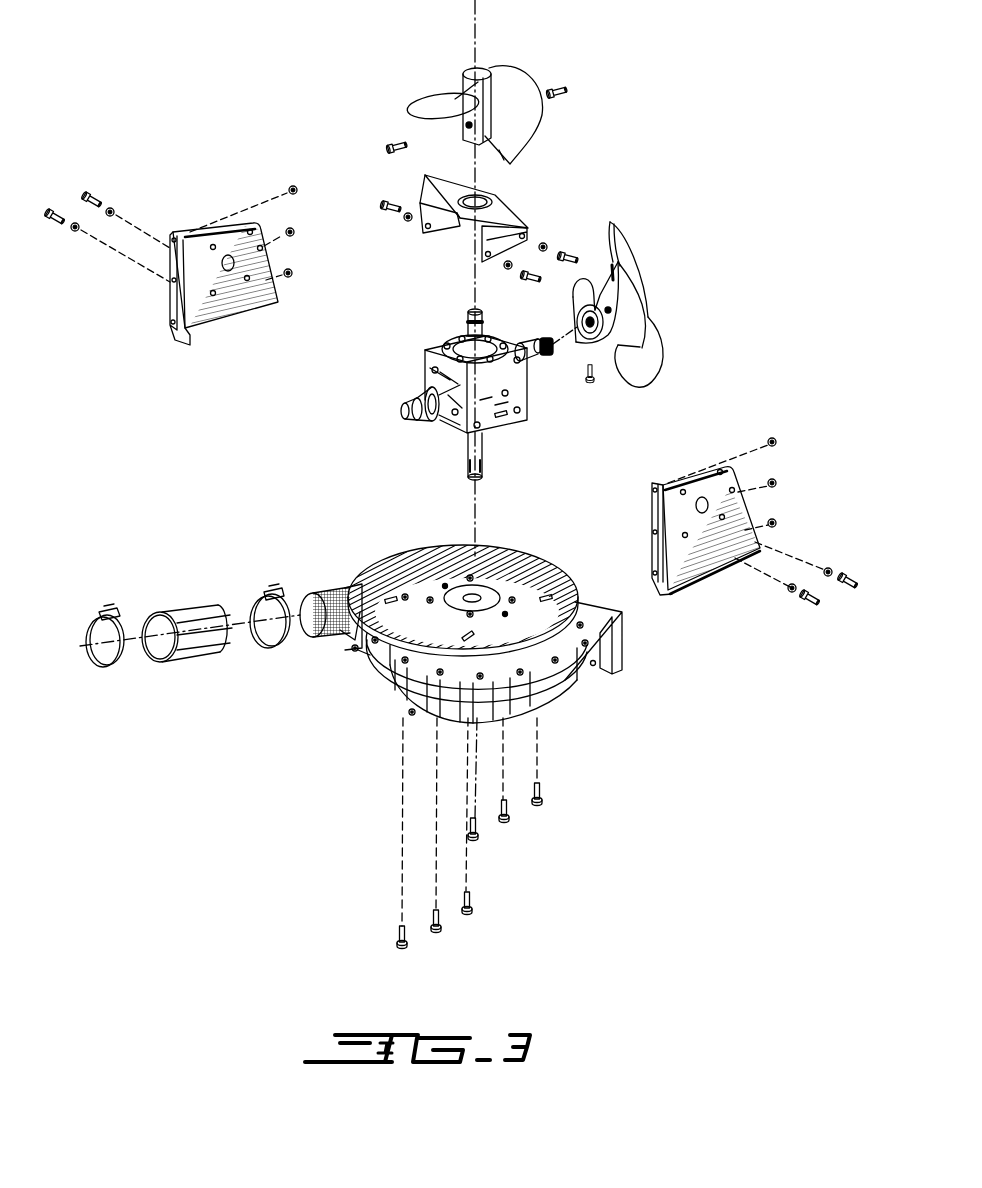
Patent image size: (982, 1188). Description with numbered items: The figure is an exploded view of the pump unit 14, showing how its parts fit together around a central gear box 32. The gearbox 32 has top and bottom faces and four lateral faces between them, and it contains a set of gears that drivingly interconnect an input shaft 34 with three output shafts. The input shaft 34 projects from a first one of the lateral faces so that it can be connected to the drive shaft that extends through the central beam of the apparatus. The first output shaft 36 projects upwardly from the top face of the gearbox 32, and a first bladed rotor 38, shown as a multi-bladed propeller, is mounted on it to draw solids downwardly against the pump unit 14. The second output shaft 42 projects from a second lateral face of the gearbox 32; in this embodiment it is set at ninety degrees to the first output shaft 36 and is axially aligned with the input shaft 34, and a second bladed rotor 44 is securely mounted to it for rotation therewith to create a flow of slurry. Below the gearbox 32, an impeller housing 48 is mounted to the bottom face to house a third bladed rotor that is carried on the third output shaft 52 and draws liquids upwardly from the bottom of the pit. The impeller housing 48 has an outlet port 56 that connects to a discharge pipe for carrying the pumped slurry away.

The pump unit 14 is at (645, 114).
The gear box 32 is at (510, 449).
The input shaft 34 is at (410, 397).
The first output shaft 36 is at (466, 320).
The first bladed rotor 38 is at (428, 58).
The second output shaft 42 is at (552, 358).
The second bladed rotor 44 is at (643, 243).
The impeller housing 48 is at (341, 678).
The third output shaft 52 is at (468, 464).
The outlet port 56 is at (330, 592).